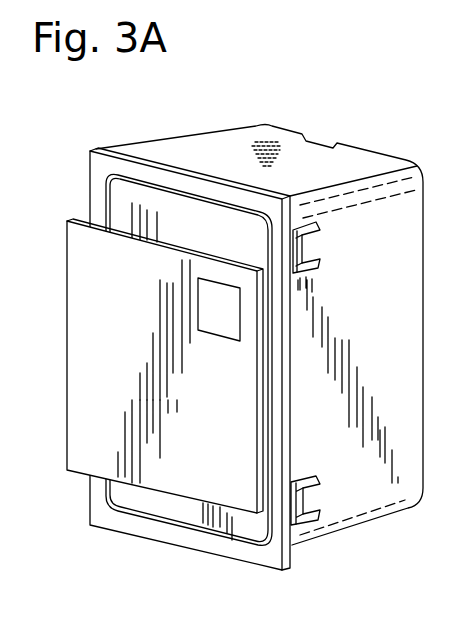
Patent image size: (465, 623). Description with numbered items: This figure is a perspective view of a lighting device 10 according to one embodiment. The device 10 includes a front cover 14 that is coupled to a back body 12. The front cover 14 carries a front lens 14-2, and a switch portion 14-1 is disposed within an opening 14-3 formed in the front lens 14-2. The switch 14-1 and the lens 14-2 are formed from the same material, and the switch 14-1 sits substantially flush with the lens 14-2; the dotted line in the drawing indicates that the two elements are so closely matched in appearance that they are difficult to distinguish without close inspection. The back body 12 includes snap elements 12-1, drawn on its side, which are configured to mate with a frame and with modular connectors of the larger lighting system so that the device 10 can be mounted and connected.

The lighting device 10 is at (155, 87).
The back body 12 is at (398, 348).
The snap elements 12-1 is at (304, 243).
The front cover 14 is at (50, 230).
The switch portion 14-1 is at (133, 366).
The front lens 14-2 is at (226, 288).
The opening 14-3 is at (198, 314).